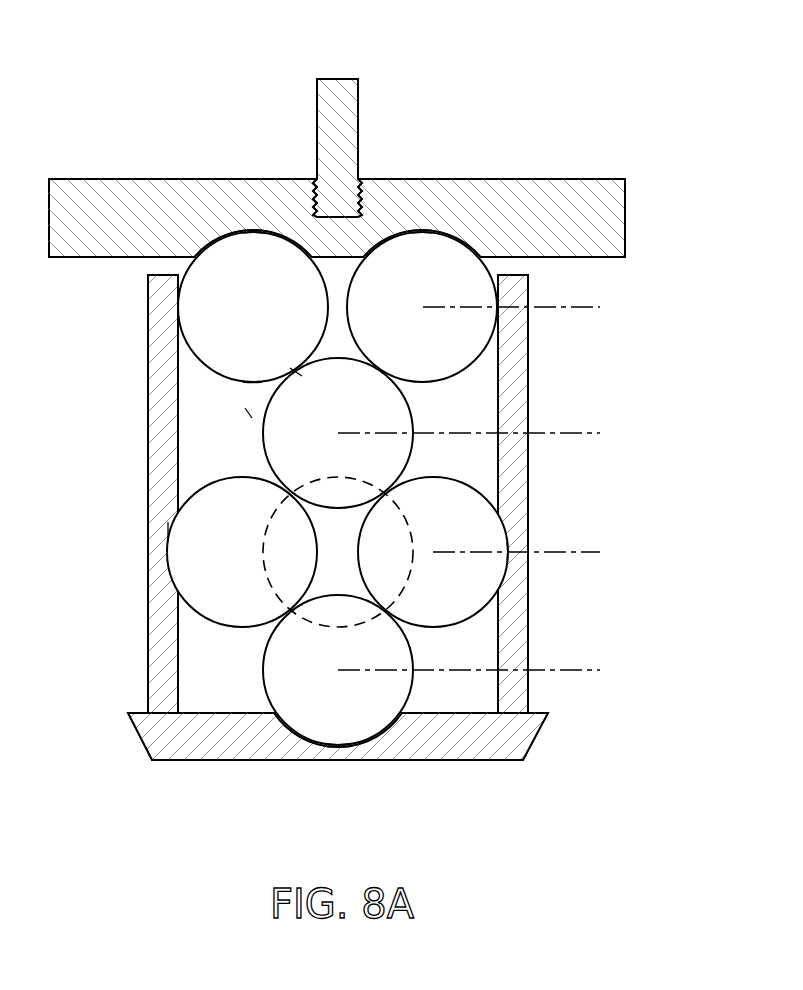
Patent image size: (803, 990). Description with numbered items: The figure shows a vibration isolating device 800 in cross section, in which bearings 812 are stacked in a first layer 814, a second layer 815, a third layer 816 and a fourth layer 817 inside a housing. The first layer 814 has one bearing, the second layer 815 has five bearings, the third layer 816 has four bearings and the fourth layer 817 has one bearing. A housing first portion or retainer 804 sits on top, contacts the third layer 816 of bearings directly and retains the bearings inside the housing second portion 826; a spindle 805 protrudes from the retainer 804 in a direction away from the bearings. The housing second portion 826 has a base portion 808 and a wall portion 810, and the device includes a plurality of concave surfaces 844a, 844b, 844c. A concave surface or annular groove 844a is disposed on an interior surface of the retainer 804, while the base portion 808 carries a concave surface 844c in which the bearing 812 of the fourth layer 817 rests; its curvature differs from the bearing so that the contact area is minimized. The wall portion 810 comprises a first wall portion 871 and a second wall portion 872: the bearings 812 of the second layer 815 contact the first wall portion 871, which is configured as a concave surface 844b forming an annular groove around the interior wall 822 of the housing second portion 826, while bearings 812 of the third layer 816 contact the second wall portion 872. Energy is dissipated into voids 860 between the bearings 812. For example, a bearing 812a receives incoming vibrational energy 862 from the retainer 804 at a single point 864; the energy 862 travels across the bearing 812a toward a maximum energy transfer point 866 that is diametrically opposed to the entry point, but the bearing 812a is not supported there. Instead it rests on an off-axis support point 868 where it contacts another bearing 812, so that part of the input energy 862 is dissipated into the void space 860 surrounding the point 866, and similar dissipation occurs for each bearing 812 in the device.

The vibration isolating device 800 is at (530, 83).
The housing first portion or retainer 804 is at (577, 185).
The spindle 805 is at (360, 96).
The base portion 808 is at (227, 758).
The wall portion 810 is at (150, 347).
The bearing 812a is at (283, 355).
The bearings 812 is at (445, 355).
The first layer 814 is at (578, 437).
The second layer 815 is at (592, 555).
The third layer 816 is at (578, 310).
The fourth layer 817 is at (578, 673).
The interior wall 822 is at (178, 680).
The housing second portion 826 is at (148, 618).
The concave surface or annular groove 844a is at (423, 232).
The concave surface 844b is at (512, 530).
The concave surface 844c is at (337, 747).
The voids 860 is at (248, 413).
The incoming vibrational energy 862 is at (258, 214).
The single point 864 is at (252, 232).
The maximum energy transfer point 866 is at (252, 384).
The off-axis support point 868 is at (297, 367).
The first wall portion 871 is at (168, 532).
The second wall portion 872 is at (177, 310).